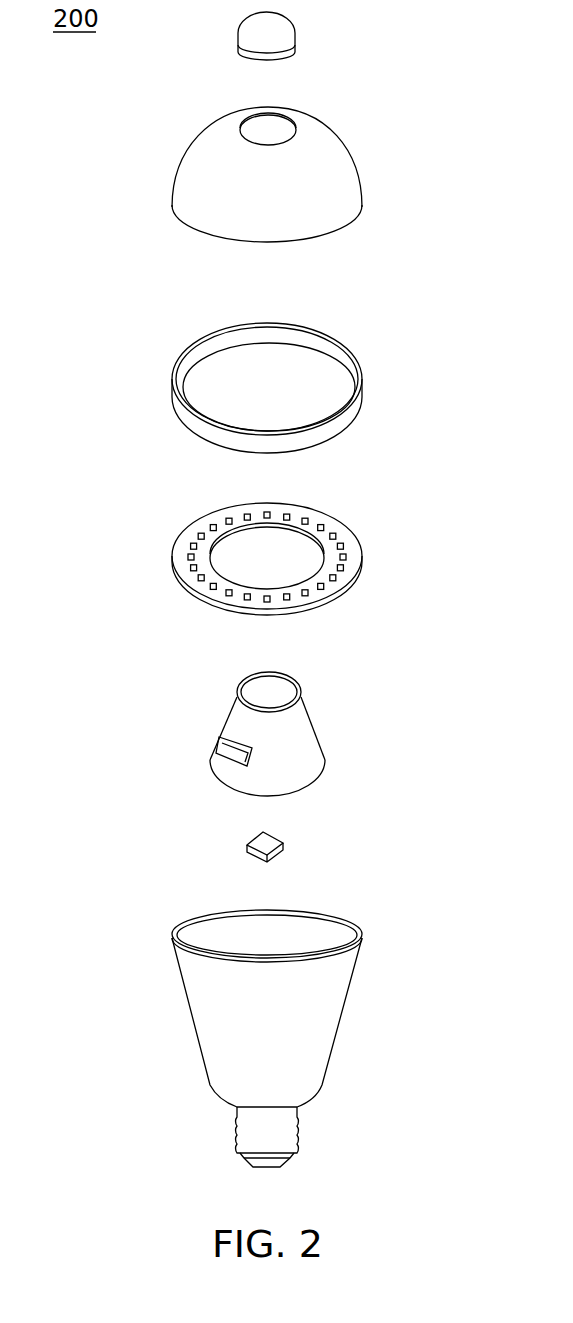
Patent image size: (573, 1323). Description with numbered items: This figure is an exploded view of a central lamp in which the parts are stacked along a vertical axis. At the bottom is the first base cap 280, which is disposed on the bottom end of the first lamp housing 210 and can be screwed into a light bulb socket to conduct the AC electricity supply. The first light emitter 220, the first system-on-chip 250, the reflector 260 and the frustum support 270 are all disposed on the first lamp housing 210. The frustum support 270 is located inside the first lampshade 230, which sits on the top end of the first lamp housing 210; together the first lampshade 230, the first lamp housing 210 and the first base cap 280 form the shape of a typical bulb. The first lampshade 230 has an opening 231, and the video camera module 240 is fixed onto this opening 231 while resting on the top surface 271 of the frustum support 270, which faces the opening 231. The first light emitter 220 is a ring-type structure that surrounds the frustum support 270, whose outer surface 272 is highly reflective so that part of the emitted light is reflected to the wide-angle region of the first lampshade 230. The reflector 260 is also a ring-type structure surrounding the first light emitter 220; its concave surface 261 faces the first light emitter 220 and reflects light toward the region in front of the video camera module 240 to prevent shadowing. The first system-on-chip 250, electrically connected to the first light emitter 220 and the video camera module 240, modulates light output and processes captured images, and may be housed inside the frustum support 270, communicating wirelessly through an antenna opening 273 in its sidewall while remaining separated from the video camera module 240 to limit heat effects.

The first lamp housing 210 is at (325, 1012).
The first light emitter 220 is at (357, 548).
The first lampshade 230 is at (345, 190).
The opening 231 is at (292, 113).
The video camera module 240 is at (296, 30).
The first system-on-chip 250 is at (270, 835).
The reflector 260 is at (345, 420).
The concave surface 261 is at (332, 352).
The frustum support 270 is at (256, 725).
The top surface 271 is at (300, 693).
The outer surface 272 is at (303, 742).
The antenna opening 273 is at (225, 755).
The first base cap 280 is at (298, 1135).